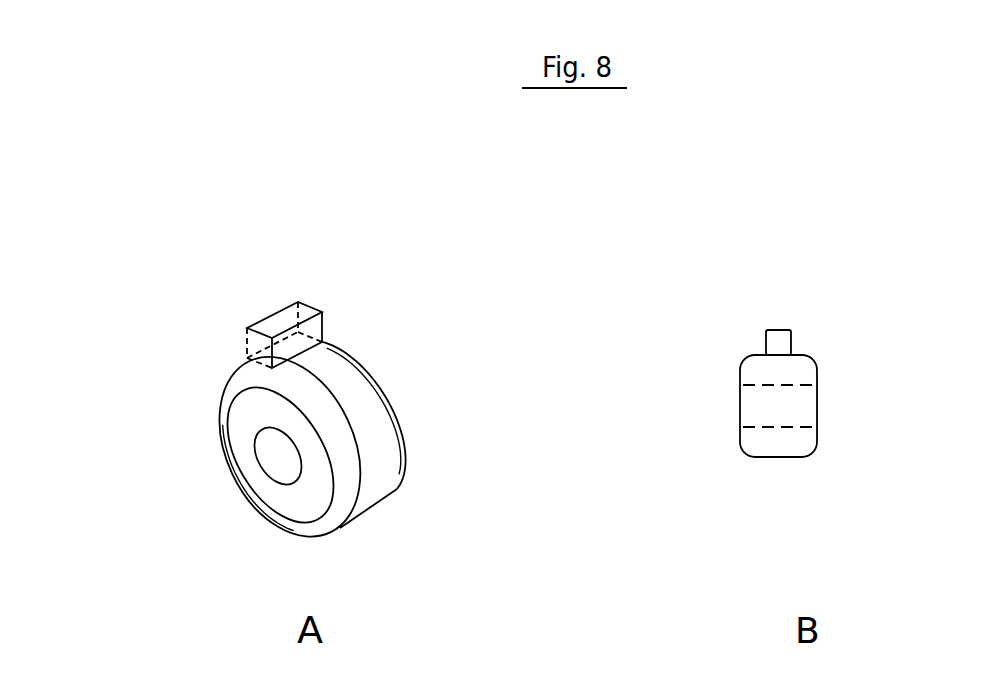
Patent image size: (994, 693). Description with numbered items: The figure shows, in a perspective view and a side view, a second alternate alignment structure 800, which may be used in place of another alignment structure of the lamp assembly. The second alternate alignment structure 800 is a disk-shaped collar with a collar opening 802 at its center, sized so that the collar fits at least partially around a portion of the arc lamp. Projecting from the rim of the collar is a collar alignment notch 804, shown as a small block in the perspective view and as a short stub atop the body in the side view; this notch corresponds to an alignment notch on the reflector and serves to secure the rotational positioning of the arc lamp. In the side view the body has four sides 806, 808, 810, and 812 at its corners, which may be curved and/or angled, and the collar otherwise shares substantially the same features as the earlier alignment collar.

In FIG. 8A, the second alternate alignment structure 800 is at (157, 318).
In FIG. 8A, the collar opening 802 is at (270, 459).
In FIG. 8B, the collar opening 802 is at (808, 405).
In FIG. 8A, the collar alignment notch 804 is at (278, 300).
In FIG. 8B, the collar alignment notch 804 is at (800, 322).
In FIG. 8B, the side 806 is at (827, 367).
In FIG. 8B, the side 808 is at (822, 456).
In FIG. 8B, the side 810 is at (741, 454).
In FIG. 8B, the side 812 is at (738, 353).